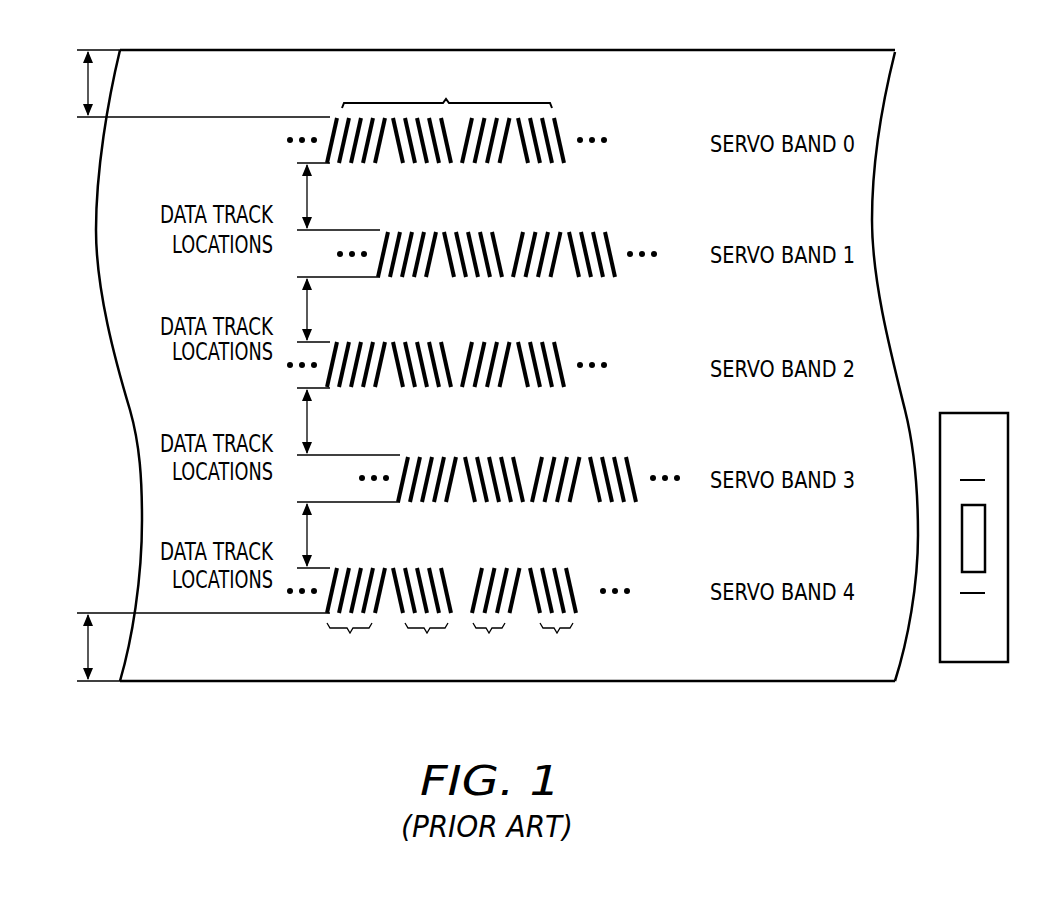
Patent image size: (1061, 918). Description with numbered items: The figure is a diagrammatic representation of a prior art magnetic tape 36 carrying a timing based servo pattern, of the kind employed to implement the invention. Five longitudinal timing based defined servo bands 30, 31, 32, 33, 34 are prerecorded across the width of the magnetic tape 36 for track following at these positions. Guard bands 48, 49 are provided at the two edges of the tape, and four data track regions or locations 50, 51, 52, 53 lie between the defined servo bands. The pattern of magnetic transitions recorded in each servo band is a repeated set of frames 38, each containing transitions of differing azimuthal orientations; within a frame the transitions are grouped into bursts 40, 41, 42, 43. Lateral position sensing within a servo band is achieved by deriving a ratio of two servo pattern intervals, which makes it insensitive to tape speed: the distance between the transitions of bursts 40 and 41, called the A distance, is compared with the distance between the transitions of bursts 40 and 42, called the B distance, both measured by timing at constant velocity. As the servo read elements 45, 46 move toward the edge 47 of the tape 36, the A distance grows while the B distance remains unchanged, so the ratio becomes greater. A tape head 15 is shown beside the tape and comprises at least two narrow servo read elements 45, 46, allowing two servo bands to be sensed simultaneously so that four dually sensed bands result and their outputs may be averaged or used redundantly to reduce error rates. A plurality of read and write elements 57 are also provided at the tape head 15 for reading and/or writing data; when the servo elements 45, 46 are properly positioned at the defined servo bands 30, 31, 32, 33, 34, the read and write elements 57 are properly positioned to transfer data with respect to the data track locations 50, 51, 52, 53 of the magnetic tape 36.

The tape head 15 is at (996, 509).
The defined servo band 30 is at (466, 115).
The defined servo band 31 is at (625, 232).
The defined servo band 32 is at (575, 347).
The defined servo band 33 is at (646, 462).
The defined servo band 34 is at (474, 599).
The magnetic tape 36 is at (490, 50).
The frame 38 is at (447, 87).
The burst 40 is at (356, 619).
The burst 41 is at (422, 619).
The burst 42 is at (496, 619).
The burst 43 is at (553, 619).
The servo read element 45 is at (974, 595).
The servo read element 46 is at (973, 478).
The edge of the tape 47 is at (495, 682).
The guard band 48 is at (82, 83).
The guard band 49 is at (84, 645).
The data track location 50 is at (305, 197).
The data track location 51 is at (305, 306).
The data track location 52 is at (305, 420).
The data track location 53 is at (305, 530).
The read and write elements 57 is at (986, 537).